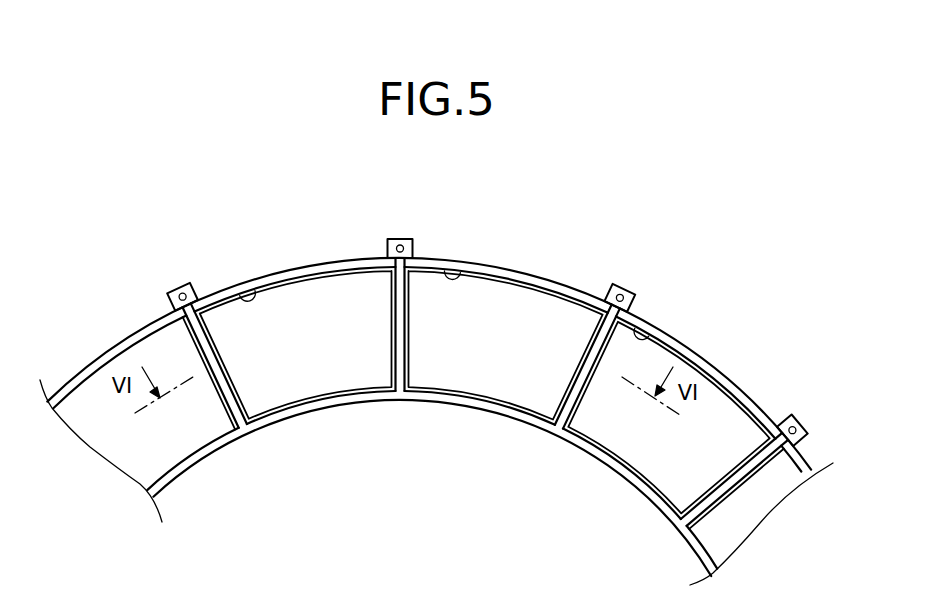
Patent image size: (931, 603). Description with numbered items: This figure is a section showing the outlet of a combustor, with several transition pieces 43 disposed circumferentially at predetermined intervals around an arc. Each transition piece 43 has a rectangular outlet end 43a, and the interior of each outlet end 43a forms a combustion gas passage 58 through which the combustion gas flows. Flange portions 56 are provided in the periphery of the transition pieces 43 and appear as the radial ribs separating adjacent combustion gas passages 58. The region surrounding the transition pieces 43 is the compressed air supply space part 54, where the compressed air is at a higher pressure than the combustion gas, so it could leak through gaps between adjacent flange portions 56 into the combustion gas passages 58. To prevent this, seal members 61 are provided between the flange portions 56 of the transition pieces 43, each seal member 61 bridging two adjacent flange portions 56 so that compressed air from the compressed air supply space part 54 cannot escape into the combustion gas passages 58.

The transition piece 43 is at (115, 343).
The outlet end 43a is at (255, 286).
The compressed air supply space part 54 is at (386, 508).
The flange portion 56 is at (192, 463).
The combustion gas passage 58 is at (285, 347).
The seal member 61 is at (180, 285).